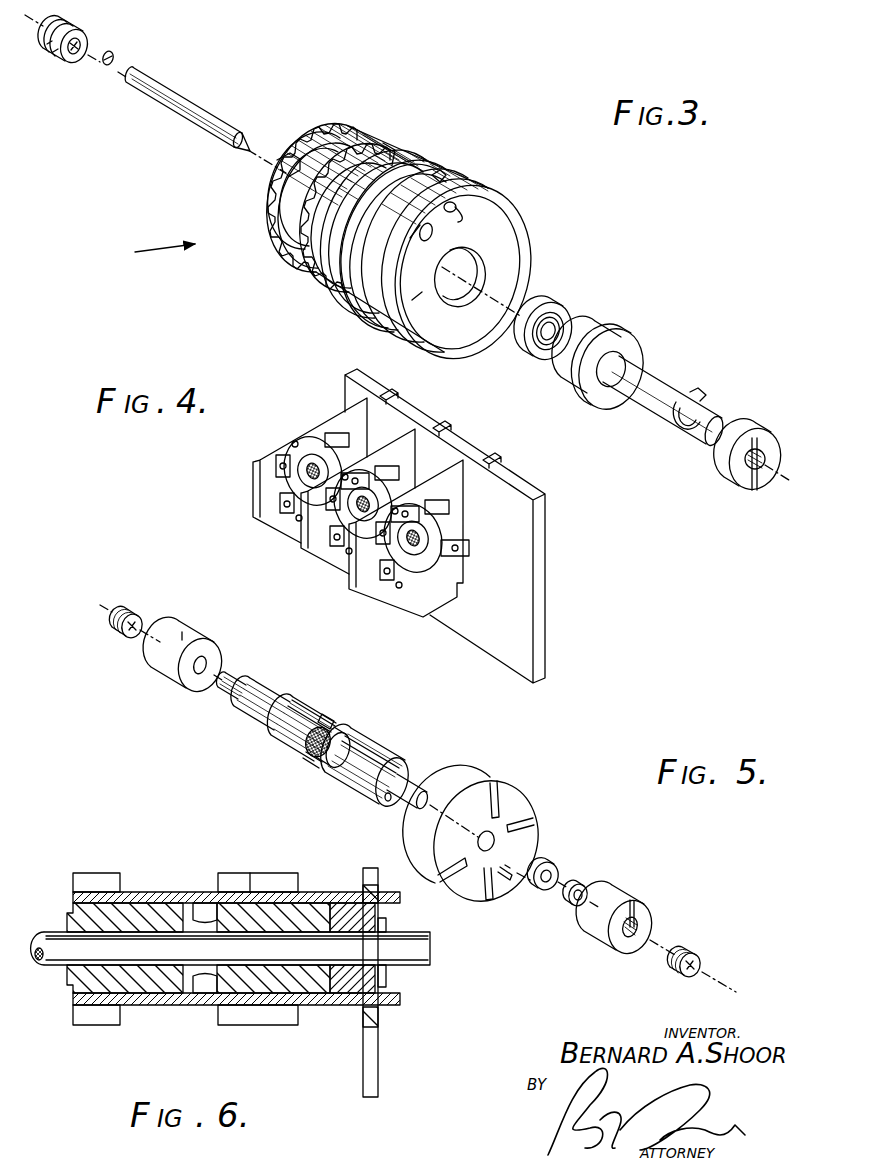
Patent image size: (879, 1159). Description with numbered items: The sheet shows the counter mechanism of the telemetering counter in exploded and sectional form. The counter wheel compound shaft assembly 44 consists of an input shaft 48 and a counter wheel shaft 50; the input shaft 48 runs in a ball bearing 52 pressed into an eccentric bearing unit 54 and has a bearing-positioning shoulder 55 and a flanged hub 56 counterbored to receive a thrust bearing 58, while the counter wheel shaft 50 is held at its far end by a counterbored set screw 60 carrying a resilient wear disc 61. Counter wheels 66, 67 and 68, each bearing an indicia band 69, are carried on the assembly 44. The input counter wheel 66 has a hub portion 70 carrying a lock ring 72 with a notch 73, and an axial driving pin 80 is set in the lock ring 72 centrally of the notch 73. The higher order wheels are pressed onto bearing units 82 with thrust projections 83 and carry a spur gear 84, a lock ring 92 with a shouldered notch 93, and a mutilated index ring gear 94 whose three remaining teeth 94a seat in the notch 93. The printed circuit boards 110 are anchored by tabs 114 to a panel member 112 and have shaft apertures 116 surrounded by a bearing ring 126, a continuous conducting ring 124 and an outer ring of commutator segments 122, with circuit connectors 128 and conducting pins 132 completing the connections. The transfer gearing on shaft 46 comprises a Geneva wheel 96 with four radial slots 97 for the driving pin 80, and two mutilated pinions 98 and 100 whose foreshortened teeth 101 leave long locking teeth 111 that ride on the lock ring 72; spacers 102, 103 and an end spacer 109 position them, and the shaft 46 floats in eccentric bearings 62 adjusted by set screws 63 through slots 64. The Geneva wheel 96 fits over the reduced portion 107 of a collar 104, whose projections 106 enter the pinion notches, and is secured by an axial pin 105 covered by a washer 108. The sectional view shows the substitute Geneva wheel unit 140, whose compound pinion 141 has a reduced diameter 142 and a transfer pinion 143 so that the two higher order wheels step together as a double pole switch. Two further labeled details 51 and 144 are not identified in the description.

In FIG. 3, the counter wheel compound shaft assembly 44 is at (147, 256).
In FIG. 5, the transfer gearing shaft 46 is at (233, 696).
In FIG. 6, the transfer gearing shaft 46 is at (431, 957).
In FIG. 3, the input shaft 48 is at (662, 392).
In FIG. 3, the counter wheel shaft 50 is at (183, 100).
In FIG. 3, the pin tip 51 is at (240, 148).
In FIG. 3, the ball bearing 52 is at (702, 400).
In FIG. 3, the eccentric bearing unit 54 is at (776, 442).
In FIG. 3, the bearing-positioning shoulder 55 is at (617, 392).
In FIG. 3, the flanged hub 56 is at (612, 332).
In FIG. 3, the thrust bearing 58 is at (562, 318).
In FIG. 3, the counterbored set screw 60 is at (67, 45).
In FIG. 3, the resilient wear disc 61 is at (110, 52).
In FIG. 5, the eccentric bearings 62 is at (167, 670).
In FIG. 5, the adjusting set screws 63 is at (118, 630).
In FIG. 3, the slots 64 is at (755, 492).
In FIG. 5, the slots 64 is at (182, 633).
In FIG. 3, the input counter wheel 66 is at (392, 316).
In FIG. 3, the counter wheel 67 is at (336, 272).
In FIG. 3, the counter wheel 68 is at (282, 248).
In FIG. 3, the indicia bands 69 is at (280, 222).
In FIG. 3, the hub portion 70 is at (512, 256).
In FIG. 3, the lock ring 72 is at (366, 294).
In FIG. 3, the notch 73 is at (446, 176).
In FIG. 3, the axial driving pin 80 is at (470, 217).
In FIG. 5, the bearing unit 82 is at (326, 724).
In FIG. 6, the bearing unit 82 is at (100, 977).
In FIG. 6, the thrust projections 83 is at (67, 920).
In FIG. 3, the spur gear 84 is at (348, 140).
In FIG. 3, the lock ring 92 is at (330, 130).
In FIG. 3, the notch 93 is at (304, 158).
In FIG. 3, the mutilated index ring gear 94 is at (338, 122).
In FIG. 3, the indexing gear teeth 94a is at (277, 160).
In FIG. 5, the Geneva wheel 96 is at (524, 806).
In FIG. 6, the Geneva wheel 96 is at (375, 1097).
In FIG. 5, the radial slots 97 is at (493, 786).
In FIG. 6, the radial slots 97 is at (378, 893).
In FIG. 5, the mutilated pinion 98 is at (336, 780).
In FIG. 5, the mutilated pinion 100 is at (285, 744).
In FIG. 5, the foreshortened teeth 101 is at (293, 716).
In FIG. 5, the spacer 102 is at (265, 695).
In FIG. 5, the spacer 103 is at (315, 767).
In FIG. 5, the collar 104 is at (403, 770).
In FIG. 6, the collar 104 is at (350, 903).
In FIG. 5, the axial pin 105 is at (508, 866).
In FIG. 6, the axial pin 105 is at (350, 994).
In FIG. 5, the projections 106 is at (372, 757).
In FIG. 6, the projections 106 is at (276, 1026).
In FIG. 5, the reduced diameter portion 107 is at (409, 788).
In FIG. 6, the reduced diameter portion 107 is at (387, 925).
In FIG. 5, the washer 108 is at (554, 870).
In FIG. 6, the washer 108 is at (387, 985).
In FIG. 5, the end spacer 109 is at (586, 888).
In FIG. 4, the printed circuit boards 110 is at (270, 518).
In FIG. 5, the locking teeth 111 is at (323, 716).
In FIG. 6, the locking teeth 111 is at (291, 873).
In FIG. 4, the panel member 112 is at (523, 602).
In FIG. 4, the printed circuit board tabs 114 is at (399, 396).
In FIG. 4, the shaft apertures 116 is at (307, 480).
In FIG. 4, the commutator segments 122 is at (283, 487).
In FIG. 4, the conducting ring 124 is at (300, 467).
In FIG. 4, the bearing ring 126 is at (427, 535).
In FIG. 4, the circuit connectors 128 is at (333, 426).
In FIG. 4, the conducting pins 132 is at (295, 460).
In FIG. 6, the Geneva wheel unit 140 is at (80, 1040).
In FIG. 6, the compound pinion 141 is at (162, 892).
In FIG. 6, the reduced diameter 142 is at (172, 1006).
In FIG. 6, the transfer pinion 143 is at (96, 873).
In FIG. 6, the flange 144 is at (240, 873).